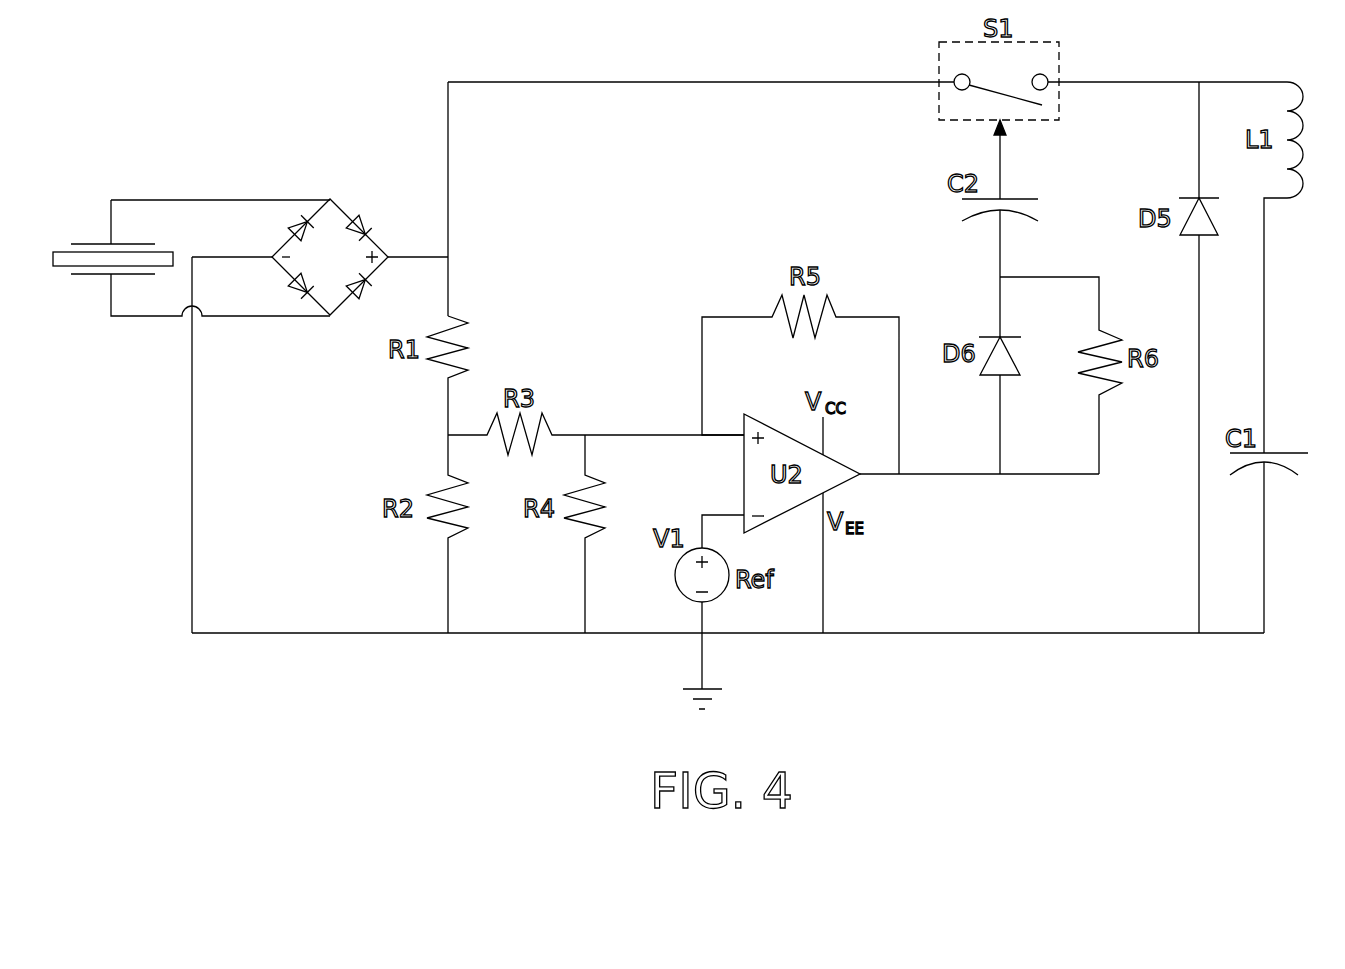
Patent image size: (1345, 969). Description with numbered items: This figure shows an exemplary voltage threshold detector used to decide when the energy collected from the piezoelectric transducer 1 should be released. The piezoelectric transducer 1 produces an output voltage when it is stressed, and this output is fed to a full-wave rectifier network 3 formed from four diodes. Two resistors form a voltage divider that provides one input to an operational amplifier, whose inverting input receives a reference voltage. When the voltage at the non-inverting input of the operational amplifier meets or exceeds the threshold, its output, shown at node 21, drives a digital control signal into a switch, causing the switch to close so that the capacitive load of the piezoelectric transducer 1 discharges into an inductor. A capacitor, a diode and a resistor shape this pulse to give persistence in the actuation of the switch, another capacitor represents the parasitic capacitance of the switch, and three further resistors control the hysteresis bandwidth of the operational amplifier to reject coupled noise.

The piezoelectric transducer 1 is at (58, 267).
The full-wave rectifier network 3 is at (332, 307).
The comparator output node 21 is at (920, 477).